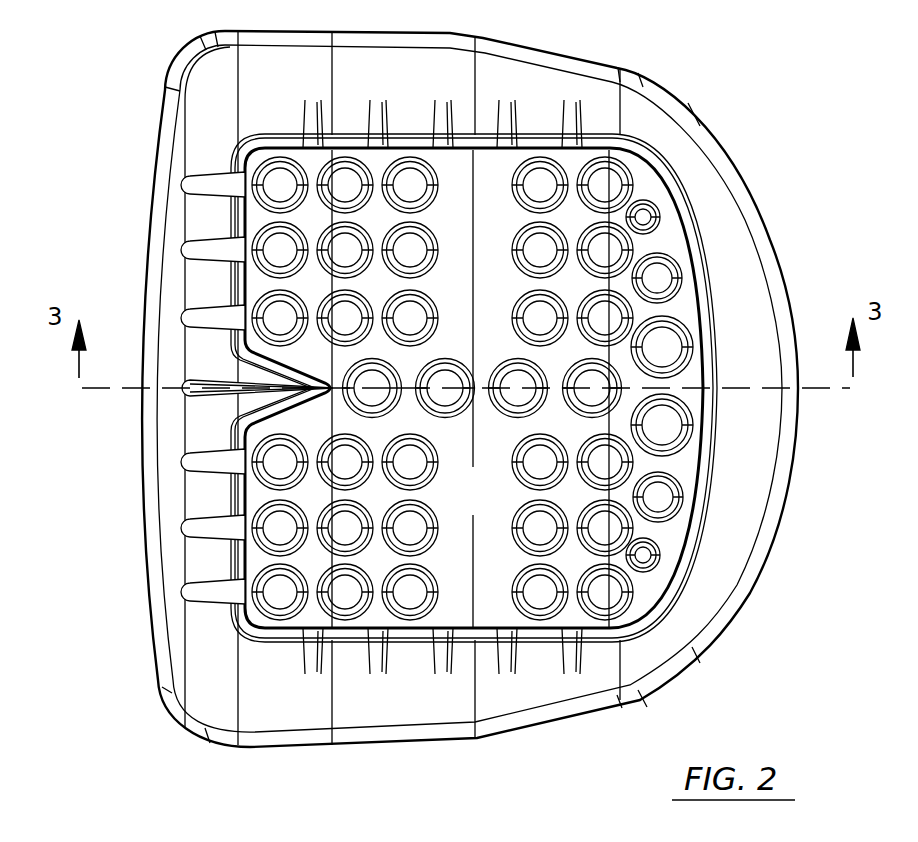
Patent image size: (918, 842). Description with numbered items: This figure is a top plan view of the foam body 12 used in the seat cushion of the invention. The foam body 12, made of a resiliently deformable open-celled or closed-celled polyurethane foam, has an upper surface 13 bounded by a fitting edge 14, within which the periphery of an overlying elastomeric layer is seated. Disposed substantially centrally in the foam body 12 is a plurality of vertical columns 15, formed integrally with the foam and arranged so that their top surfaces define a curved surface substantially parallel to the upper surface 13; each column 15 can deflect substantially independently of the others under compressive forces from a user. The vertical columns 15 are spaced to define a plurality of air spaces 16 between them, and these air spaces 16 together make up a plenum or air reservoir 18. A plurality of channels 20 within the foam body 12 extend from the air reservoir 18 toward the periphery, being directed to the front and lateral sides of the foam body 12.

The foam body 12 is at (748, 610).
The upper surface 13 is at (723, 217).
The fitting edge 14 is at (670, 180).
The vertical columns 15 is at (670, 343).
The air spaces 16 is at (670, 468).
The air reservoir 18 is at (490, 503).
The channels 20 is at (180, 460).